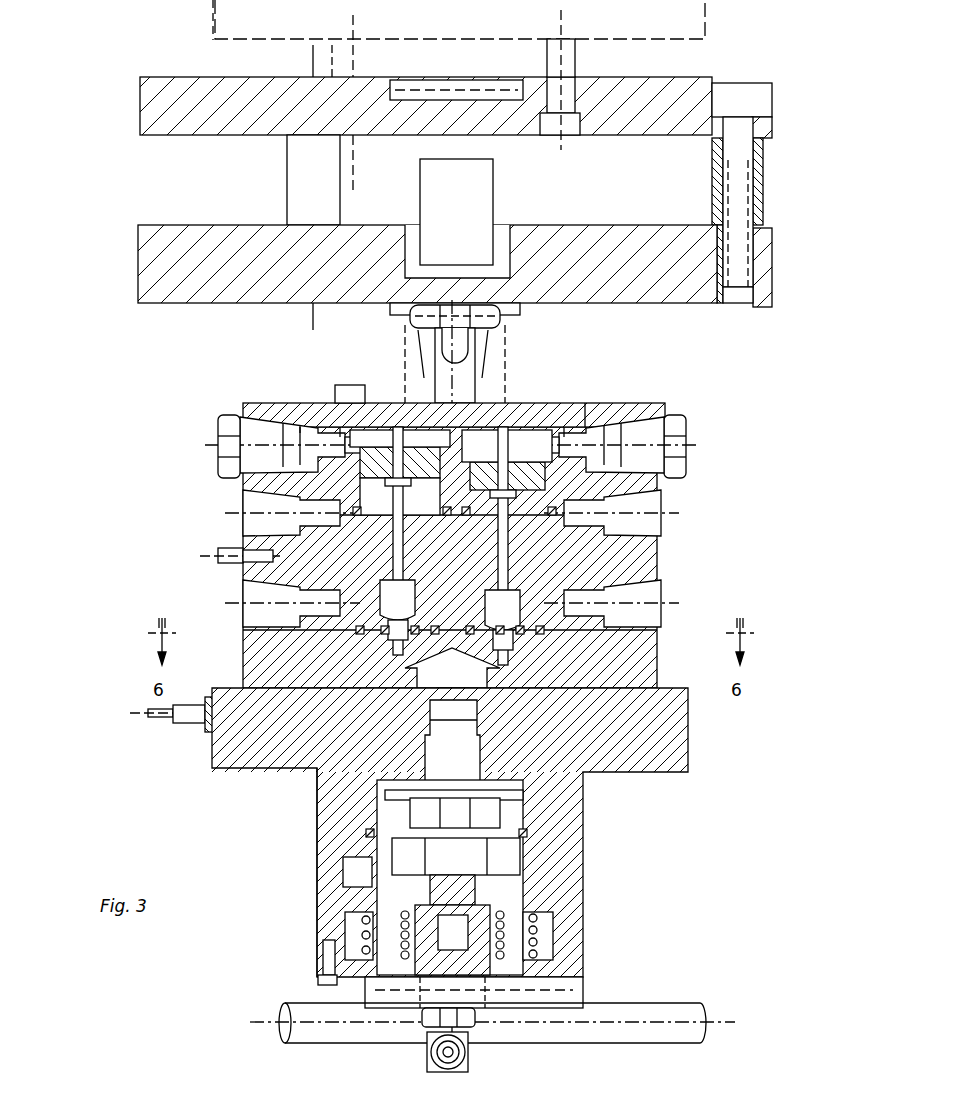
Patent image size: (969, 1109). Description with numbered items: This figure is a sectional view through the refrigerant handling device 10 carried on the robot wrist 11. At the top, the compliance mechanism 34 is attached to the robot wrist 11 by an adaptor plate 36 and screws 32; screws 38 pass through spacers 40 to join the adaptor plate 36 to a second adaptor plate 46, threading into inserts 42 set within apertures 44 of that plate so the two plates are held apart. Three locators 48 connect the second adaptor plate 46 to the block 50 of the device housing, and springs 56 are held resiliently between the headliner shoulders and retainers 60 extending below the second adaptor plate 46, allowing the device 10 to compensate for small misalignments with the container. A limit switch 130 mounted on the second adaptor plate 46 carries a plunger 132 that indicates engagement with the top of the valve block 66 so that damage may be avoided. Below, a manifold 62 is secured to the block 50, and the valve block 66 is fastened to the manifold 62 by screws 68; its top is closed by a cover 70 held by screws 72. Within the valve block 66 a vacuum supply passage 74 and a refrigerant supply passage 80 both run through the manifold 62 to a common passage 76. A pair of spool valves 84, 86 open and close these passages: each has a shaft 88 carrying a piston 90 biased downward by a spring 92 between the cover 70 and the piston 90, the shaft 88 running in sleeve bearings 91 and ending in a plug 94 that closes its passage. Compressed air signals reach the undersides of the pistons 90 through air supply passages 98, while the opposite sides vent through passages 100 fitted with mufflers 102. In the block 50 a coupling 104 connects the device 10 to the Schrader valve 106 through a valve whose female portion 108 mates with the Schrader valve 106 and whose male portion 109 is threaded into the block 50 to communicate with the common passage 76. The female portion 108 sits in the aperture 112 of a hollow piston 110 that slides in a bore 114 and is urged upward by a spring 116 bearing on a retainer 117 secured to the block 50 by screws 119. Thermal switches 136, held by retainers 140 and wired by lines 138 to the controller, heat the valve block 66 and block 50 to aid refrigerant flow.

The device 10 is at (782, 362).
The robot wrist 11 is at (706, 34).
The screws 32 is at (575, 105).
The compliance mechanism 34 is at (800, 222).
The adaptor plate 36 is at (660, 80).
The screws 38 is at (775, 75).
The spacers 40 is at (340, 175).
The inserts 42 is at (760, 300).
The apertures 44 is at (750, 258).
The second adaptor plate 46 is at (772, 282).
The locators 48 is at (470, 385).
The block 50 is at (690, 738).
The springs 56 is at (485, 362).
The retainers 60 is at (395, 310).
The manifold 62 is at (660, 665).
The valve block 66 is at (645, 412).
The screws 68 is at (300, 745).
The cover 70 is at (570, 403).
The screws 72 is at (345, 390).
The vacuum supply passage 74 is at (245, 588).
The common passage 76 is at (455, 705).
The refrigerant supply passage 80 is at (640, 590).
The spool valve 84 is at (280, 480).
The spool valve 86 is at (655, 480).
The shaft 88 is at (470, 503).
The piston 90 is at (470, 487).
The sleeve bearings 91 is at (485, 612).
The spring 92 is at (470, 405).
The plug 94 is at (415, 582).
The air supply passages 98 is at (270, 498).
The passages 100 is at (340, 435).
The mufflers 102 is at (232, 412).
The coupling 104 is at (518, 858).
The Schrader valve 106 is at (540, 1003).
The female portion 108 is at (500, 900).
The male portion 109 is at (472, 765).
The hollow piston 110 is at (345, 895).
The aperture 112 is at (510, 815).
The bore 114 is at (345, 872).
The spring 116 is at (540, 925).
The retainer 117 is at (323, 965).
The screws 119 is at (318, 982).
The limit switch 130 is at (493, 190).
The plunger 132 is at (470, 345).
The thermal switches 136 is at (235, 552).
The lines 138 is at (235, 560).
The retainers 140 is at (245, 540).